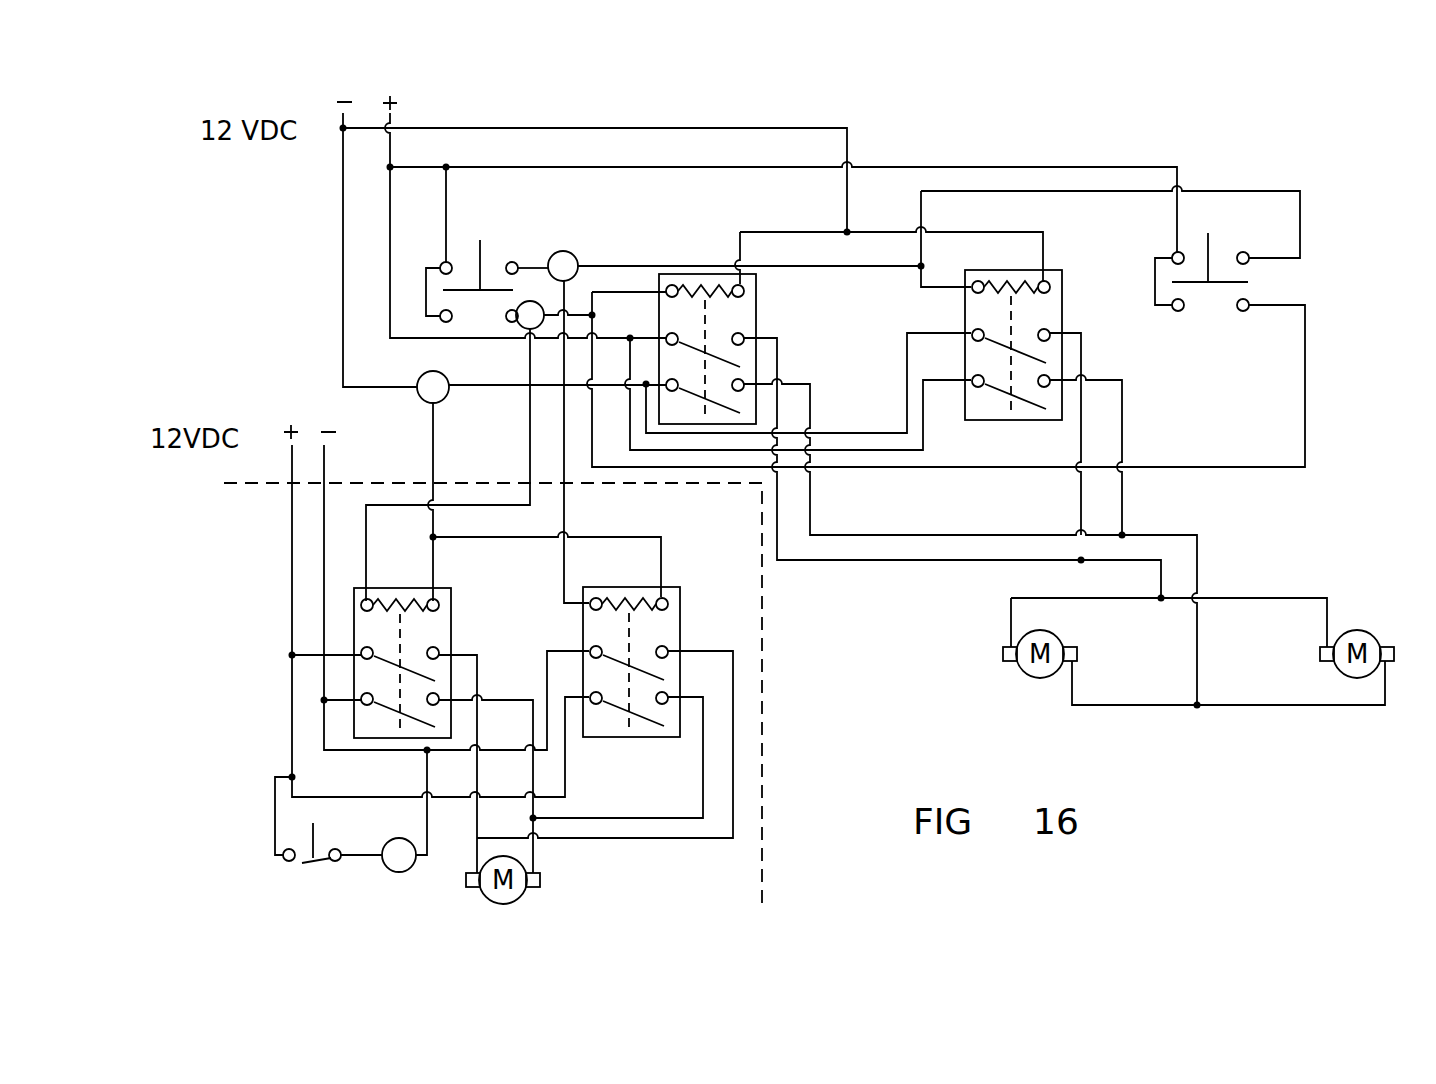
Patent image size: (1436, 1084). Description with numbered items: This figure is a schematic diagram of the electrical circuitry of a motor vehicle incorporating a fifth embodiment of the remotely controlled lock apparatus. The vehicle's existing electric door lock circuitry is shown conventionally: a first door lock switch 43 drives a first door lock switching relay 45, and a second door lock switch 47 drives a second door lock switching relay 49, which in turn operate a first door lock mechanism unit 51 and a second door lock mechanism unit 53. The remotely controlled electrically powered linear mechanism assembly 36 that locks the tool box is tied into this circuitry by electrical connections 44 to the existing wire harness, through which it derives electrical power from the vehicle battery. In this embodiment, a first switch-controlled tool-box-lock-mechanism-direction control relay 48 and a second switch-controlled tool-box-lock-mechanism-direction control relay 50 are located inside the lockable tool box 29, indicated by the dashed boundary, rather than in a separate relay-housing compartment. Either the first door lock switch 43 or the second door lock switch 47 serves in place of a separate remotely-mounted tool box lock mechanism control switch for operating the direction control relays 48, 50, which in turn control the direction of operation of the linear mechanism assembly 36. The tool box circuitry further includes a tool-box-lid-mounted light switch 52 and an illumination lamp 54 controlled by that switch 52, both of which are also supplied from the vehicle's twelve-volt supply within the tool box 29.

The lockable tool box 29 is at (258, 486).
The electrically powered linear mechanism assembly 36 is at (525, 898).
The first door lock switch 43 is at (497, 243).
The electrical connections 44 is at (545, 307).
The first door lock switching relay 45 is at (700, 270).
The second door lock switch 47 is at (1232, 245).
The first switch-controlled tool-box-lock-mechanism-direction control relay 48 is at (452, 630).
The second door lock switching relay 49 is at (1060, 283).
The second switch-controlled tool-box-lock-mechanism-direction control relay 50 is at (690, 596).
The first door lock mechanism unit 51 is at (1037, 678).
The tool-box-lid-mounted light switch 52 is at (305, 868).
The second door lock mechanism unit 53 is at (1372, 627).
The illumination lamp 54 is at (380, 870).